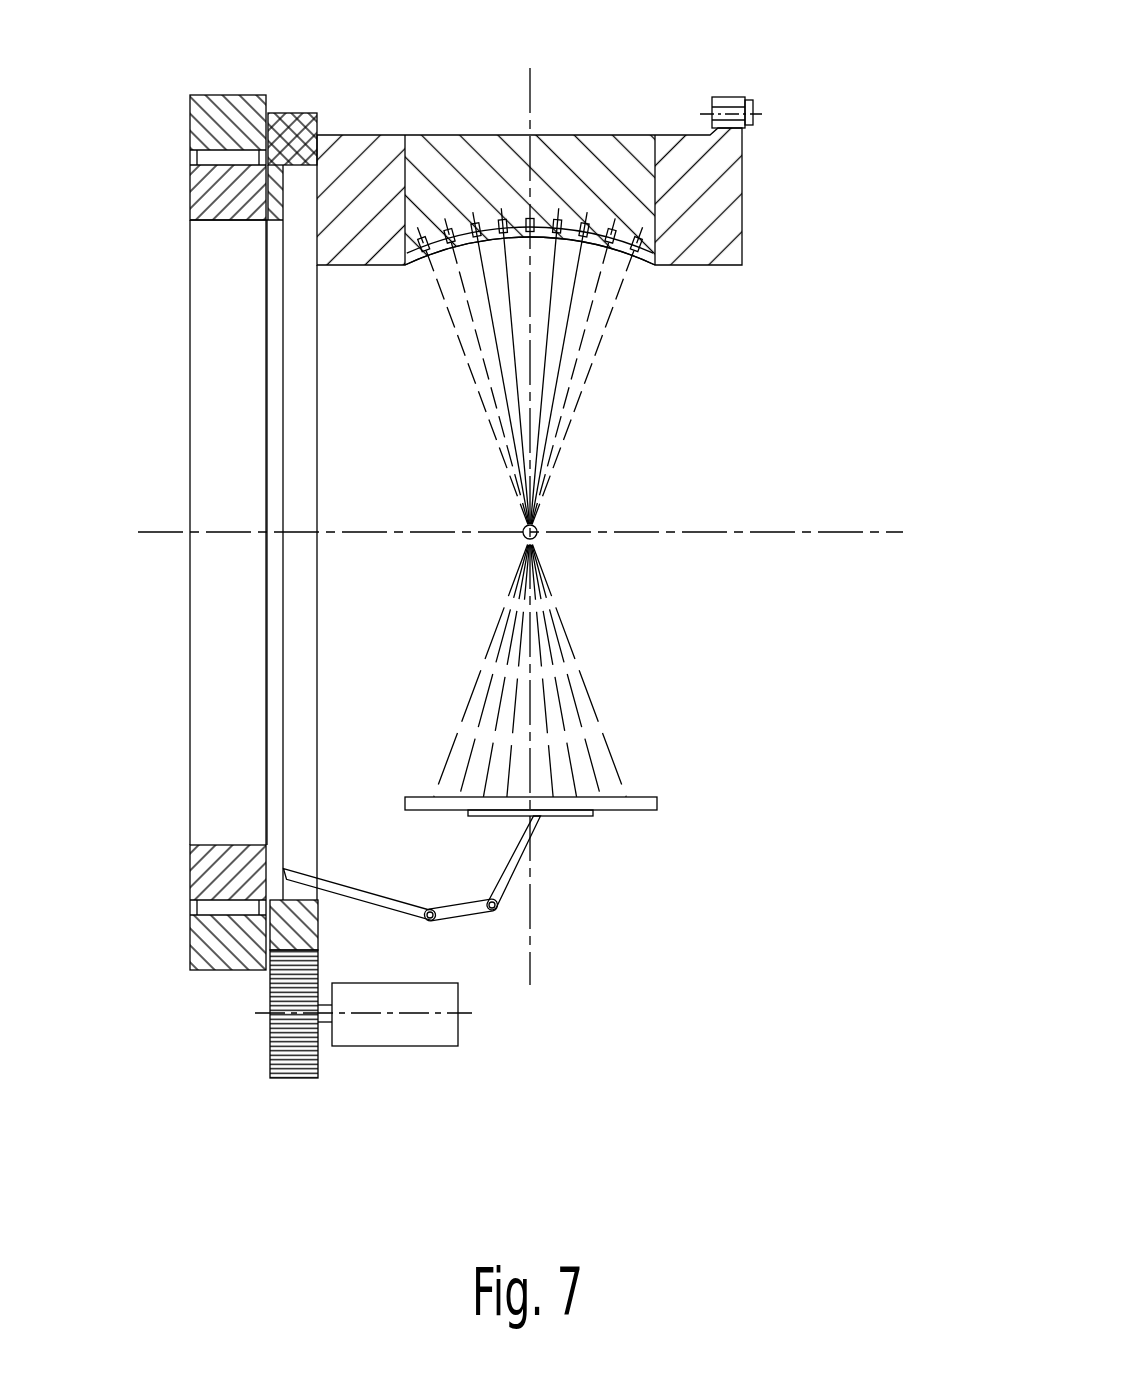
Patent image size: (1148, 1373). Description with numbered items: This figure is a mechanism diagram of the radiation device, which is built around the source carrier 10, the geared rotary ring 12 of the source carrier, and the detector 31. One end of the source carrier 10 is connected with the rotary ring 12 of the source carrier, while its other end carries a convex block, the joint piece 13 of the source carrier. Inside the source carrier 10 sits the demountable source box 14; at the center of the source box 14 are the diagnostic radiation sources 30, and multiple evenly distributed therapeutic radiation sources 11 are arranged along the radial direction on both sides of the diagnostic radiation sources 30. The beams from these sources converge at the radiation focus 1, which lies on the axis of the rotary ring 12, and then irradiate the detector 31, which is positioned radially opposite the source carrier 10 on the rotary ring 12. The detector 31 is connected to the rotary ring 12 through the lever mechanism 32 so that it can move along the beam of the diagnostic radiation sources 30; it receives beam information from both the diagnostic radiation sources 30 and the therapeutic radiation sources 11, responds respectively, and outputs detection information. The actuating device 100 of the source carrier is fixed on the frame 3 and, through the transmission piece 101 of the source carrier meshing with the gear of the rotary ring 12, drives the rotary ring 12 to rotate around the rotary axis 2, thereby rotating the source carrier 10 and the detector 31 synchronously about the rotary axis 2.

The radiation focus 1 is at (541, 527).
The rotary axis 2 is at (537, 526).
The frame 3 is at (240, 123).
The source carrier 10 is at (681, 185).
The therapeutic radiation sources 11 is at (449, 215).
The rotary ring of source carrier 12 is at (280, 165).
The joint piece of source carrier 13 is at (730, 106).
The source box 14 is at (507, 157).
The diagnostic radiation sources 30 is at (533, 222).
The detector 31 is at (612, 805).
The lever mechanism 32 is at (465, 910).
The actuating device of source carrier 100 is at (395, 1030).
The transmission piece of source carrier 101 is at (293, 978).